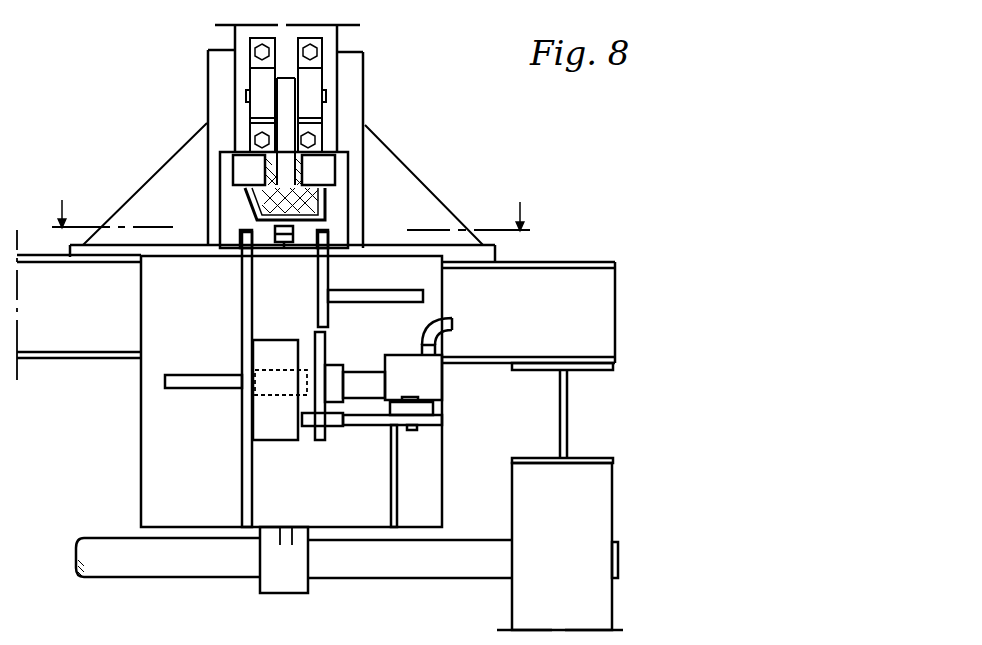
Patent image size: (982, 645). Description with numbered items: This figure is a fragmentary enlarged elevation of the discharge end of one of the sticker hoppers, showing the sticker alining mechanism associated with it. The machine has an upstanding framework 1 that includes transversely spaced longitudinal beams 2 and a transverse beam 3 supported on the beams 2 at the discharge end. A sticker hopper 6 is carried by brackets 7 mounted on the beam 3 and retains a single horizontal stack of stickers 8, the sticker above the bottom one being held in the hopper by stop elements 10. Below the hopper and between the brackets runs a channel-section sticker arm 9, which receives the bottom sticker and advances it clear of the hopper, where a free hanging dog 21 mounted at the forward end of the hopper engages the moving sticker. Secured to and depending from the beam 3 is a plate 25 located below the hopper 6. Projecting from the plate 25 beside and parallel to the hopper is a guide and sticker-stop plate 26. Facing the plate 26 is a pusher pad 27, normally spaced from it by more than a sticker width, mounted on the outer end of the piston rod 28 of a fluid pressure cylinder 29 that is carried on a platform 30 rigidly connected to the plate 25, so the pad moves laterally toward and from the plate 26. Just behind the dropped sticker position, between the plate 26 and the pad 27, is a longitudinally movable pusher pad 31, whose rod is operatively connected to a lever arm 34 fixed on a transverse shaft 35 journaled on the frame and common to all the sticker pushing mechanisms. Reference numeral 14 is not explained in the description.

The framework 1 is at (622, 500).
The longitudinal beams 2 is at (563, 408).
The transverse beam 3 is at (588, 273).
The sticker hopper 6 is at (328, 68).
The bracket 7 is at (218, 95).
The sticker 8 is at (273, 187).
The sticker arm 9 is at (380, 205).
The stop element 10 is at (307, 168).
The rod 14 is at (283, 238).
The free hanging dog 21 is at (303, 120).
The plate 25 is at (152, 452).
The guide and sticker-stop plate 26 is at (245, 302).
The pusher pad 27 is at (325, 362).
The piston rod 28 is at (350, 372).
The fluid pressure cylinder 29 is at (427, 382).
The platform 30 is at (365, 422).
The longitudinally movable pusher pad 31 is at (260, 420).
The lever arm 34 is at (288, 527).
The transverse shaft 35 is at (442, 567).